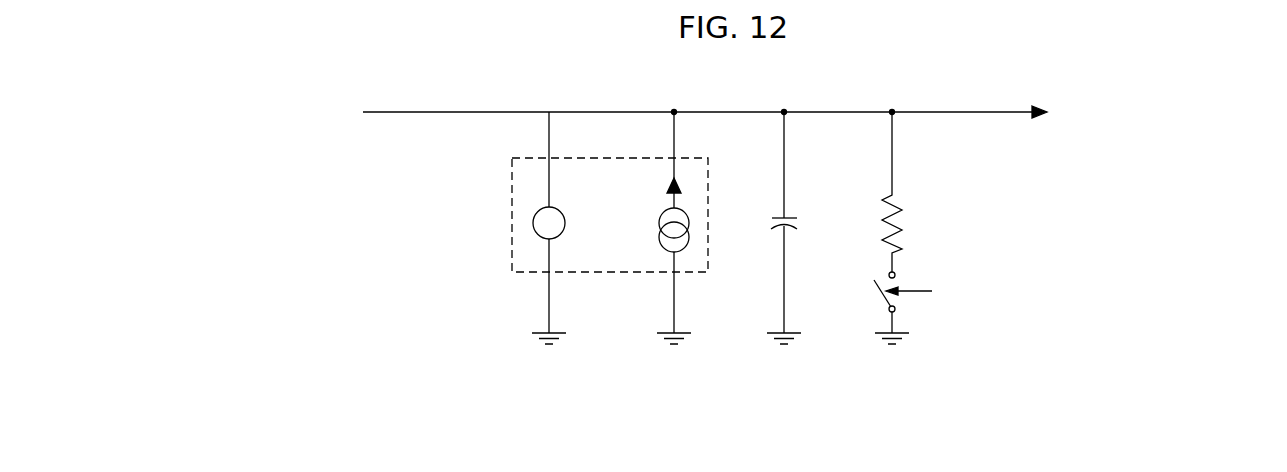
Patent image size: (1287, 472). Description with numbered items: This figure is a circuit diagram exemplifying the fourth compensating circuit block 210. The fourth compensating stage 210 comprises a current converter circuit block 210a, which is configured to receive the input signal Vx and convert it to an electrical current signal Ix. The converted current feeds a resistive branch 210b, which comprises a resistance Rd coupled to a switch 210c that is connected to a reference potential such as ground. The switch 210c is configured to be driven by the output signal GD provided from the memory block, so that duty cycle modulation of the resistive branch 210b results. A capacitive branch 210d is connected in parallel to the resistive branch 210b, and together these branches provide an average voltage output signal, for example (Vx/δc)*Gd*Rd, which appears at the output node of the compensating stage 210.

The fourth compensating circuit block 210 is at (366, 217).
The current converter circuit block 210a is at (510, 256).
The resistive branch 210b is at (902, 226).
The switch 210c is at (898, 302).
The capacitive branch 210d is at (790, 218).